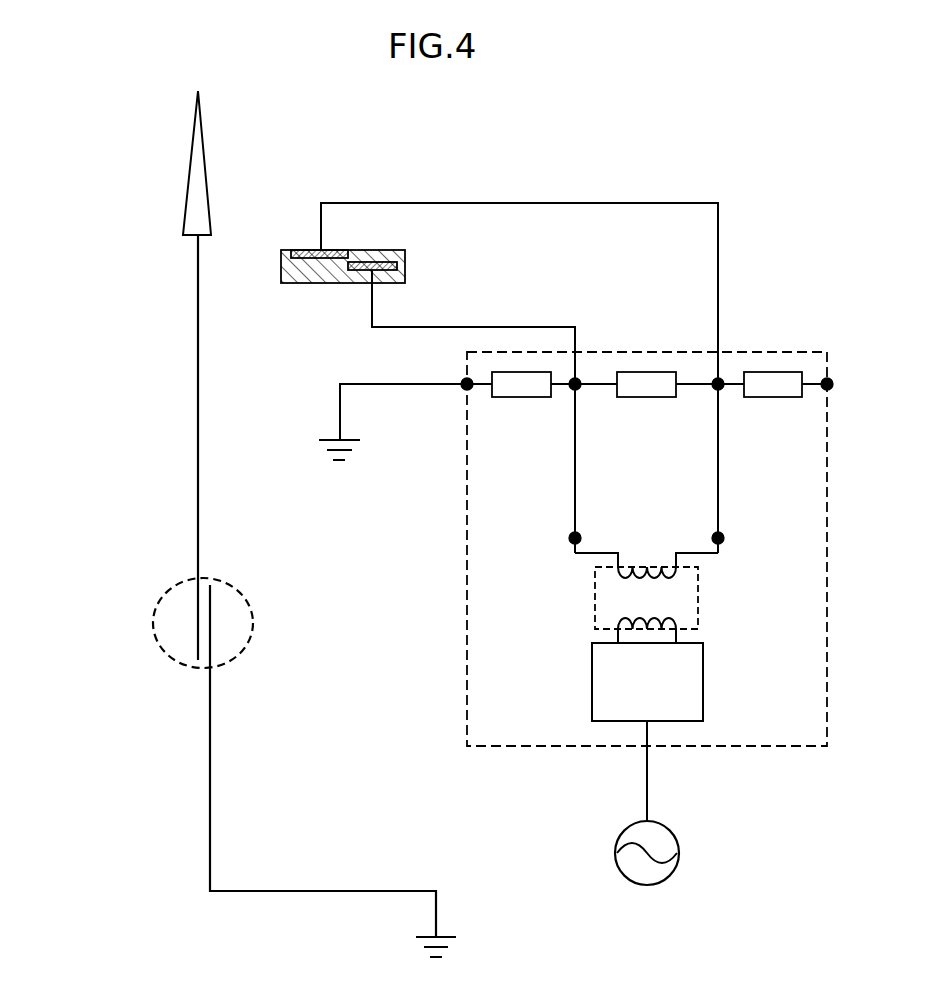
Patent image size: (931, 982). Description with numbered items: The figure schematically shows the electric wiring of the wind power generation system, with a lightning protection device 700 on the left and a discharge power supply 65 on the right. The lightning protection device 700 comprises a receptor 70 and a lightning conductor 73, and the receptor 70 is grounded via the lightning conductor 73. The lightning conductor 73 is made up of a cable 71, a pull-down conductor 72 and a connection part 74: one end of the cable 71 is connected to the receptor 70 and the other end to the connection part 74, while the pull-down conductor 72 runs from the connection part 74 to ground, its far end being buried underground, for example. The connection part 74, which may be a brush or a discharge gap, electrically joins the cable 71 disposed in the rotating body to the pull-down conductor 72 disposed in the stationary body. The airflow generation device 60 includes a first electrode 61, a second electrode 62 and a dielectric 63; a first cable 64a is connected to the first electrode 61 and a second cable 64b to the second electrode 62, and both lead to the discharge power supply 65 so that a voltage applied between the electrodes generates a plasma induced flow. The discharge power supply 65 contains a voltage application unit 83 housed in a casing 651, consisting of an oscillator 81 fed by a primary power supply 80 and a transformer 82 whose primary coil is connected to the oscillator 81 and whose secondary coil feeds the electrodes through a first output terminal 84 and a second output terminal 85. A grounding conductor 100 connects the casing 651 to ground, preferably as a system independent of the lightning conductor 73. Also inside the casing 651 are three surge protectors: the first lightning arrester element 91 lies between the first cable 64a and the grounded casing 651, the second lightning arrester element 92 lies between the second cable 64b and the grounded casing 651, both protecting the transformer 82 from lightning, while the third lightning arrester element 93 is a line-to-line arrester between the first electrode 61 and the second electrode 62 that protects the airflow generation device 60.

The lightning protection device 700 is at (249, 524).
The receptor 70 is at (193, 190).
The cable 71 is at (198, 570).
The pull-down conductor 72 is at (210, 683).
The lightning conductor 73 is at (143, 555).
The connection part 74 is at (221, 604).
The airflow generation device 60 is at (348, 257).
The first electrode 61 is at (318, 250).
The second electrode 62 is at (397, 266).
The dielectric 63 is at (336, 275).
The first cable 64a is at (718, 279).
The second cable 64b is at (510, 327).
The discharge power supply 65 is at (620, 549).
The casing 651 is at (467, 600).
The grounding conductor 100 is at (420, 392).
The first lightning arrester element 91 is at (774, 397).
The second lightning arrester element 92 is at (522, 397).
The third lightning arrester element 93 is at (647, 397).
The first output terminal 84 is at (724, 538).
The second output terminal 85 is at (569, 538).
The voltage application unit 83 is at (631, 637).
The transformer 82 is at (698, 593).
The oscillator 81 is at (703, 683).
The primary power supply 80 is at (648, 885).